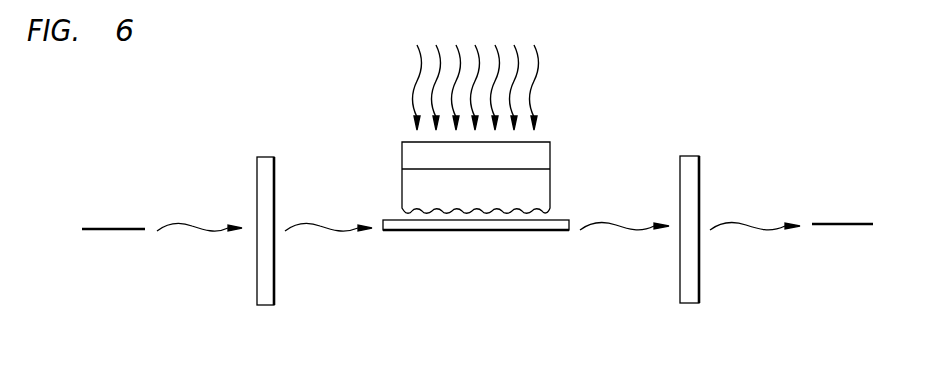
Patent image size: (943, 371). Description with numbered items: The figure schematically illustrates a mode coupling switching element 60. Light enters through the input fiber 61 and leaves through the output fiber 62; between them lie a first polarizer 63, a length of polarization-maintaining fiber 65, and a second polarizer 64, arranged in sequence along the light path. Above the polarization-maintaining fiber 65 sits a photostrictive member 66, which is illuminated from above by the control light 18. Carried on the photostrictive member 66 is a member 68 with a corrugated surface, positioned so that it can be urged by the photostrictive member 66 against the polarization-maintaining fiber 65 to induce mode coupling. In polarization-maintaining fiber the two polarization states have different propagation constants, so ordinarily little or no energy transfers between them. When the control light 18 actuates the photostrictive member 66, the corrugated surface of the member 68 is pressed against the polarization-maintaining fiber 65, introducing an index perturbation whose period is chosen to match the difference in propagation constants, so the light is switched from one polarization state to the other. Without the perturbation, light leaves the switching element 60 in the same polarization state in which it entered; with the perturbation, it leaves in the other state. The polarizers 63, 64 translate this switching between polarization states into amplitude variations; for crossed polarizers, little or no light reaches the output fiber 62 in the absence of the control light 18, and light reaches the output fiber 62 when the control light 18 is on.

The switching element 60 is at (681, 78).
The input fiber 61 is at (108, 230).
The output fiber 62 is at (848, 226).
The polarizer 63 is at (257, 268).
The polarizer 64 is at (680, 268).
The length of polarization-maintaining fiber 65 is at (448, 236).
The photostrictive member 66 is at (402, 158).
The member with a corrugated surface 68 is at (550, 185).
The control light 18 is at (413, 78).